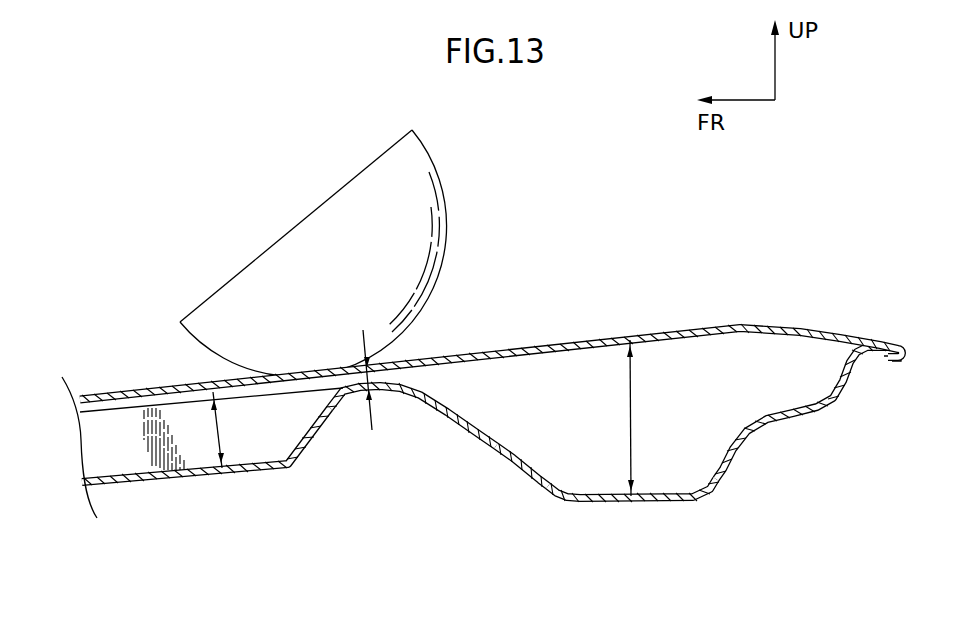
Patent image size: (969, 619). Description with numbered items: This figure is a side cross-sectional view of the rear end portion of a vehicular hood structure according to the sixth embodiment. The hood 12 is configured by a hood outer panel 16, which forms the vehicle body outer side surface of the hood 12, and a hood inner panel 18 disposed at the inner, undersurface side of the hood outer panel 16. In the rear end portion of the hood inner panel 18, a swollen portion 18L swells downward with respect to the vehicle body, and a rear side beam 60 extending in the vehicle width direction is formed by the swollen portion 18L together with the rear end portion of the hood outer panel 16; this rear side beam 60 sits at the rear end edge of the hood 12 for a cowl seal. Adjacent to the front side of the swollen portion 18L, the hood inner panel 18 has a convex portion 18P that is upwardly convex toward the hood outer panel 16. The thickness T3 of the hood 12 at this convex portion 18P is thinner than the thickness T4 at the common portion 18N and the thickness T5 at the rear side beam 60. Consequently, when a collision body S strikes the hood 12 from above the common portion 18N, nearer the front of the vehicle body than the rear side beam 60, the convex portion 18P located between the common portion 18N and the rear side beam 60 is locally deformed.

The hood 12 is at (135, 320).
The hood outer panel 16 is at (161, 371).
The hood inner panel 18 is at (126, 526).
The common portion 18N is at (175, 488).
The convex portion 18P is at (396, 398).
The swollen portion 18L is at (607, 510).
The rear side beam 60 is at (602, 420).
The collision body S is at (440, 182).
The thickness of the hood at the convex portion T3 is at (385, 373).
The thickness of the hood at the common portion T4 is at (223, 427).
The thickness of the hood at the rear side beam T5 is at (634, 417).